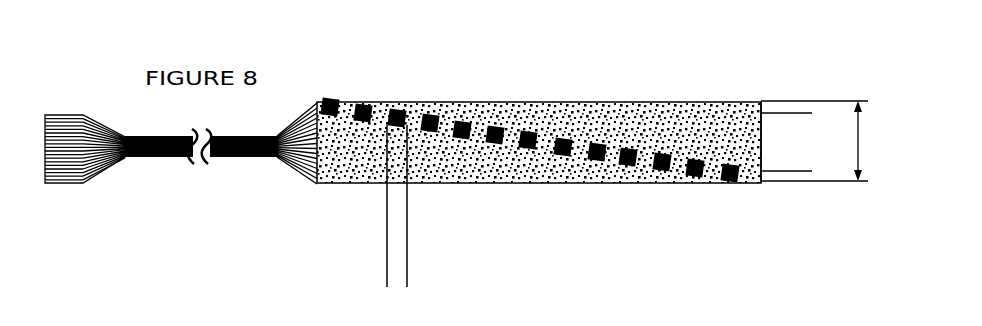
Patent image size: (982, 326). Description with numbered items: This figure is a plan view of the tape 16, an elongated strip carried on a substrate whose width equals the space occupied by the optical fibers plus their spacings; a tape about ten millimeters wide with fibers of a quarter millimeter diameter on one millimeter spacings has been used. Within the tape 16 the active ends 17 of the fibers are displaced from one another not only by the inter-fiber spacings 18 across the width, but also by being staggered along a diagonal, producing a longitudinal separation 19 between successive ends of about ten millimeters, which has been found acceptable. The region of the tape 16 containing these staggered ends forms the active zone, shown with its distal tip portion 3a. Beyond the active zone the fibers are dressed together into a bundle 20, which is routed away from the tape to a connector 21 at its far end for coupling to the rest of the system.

The distal tip portion of catheter body 3a is at (752, 101).
The tape 16 is at (473, 185).
The active ends 17 is at (592, 160).
The inter-fiber spacings 18 is at (787, 100).
The longitudinal separation 19 is at (443, 240).
The bundle 20 is at (158, 162).
The connector 21 is at (70, 193).